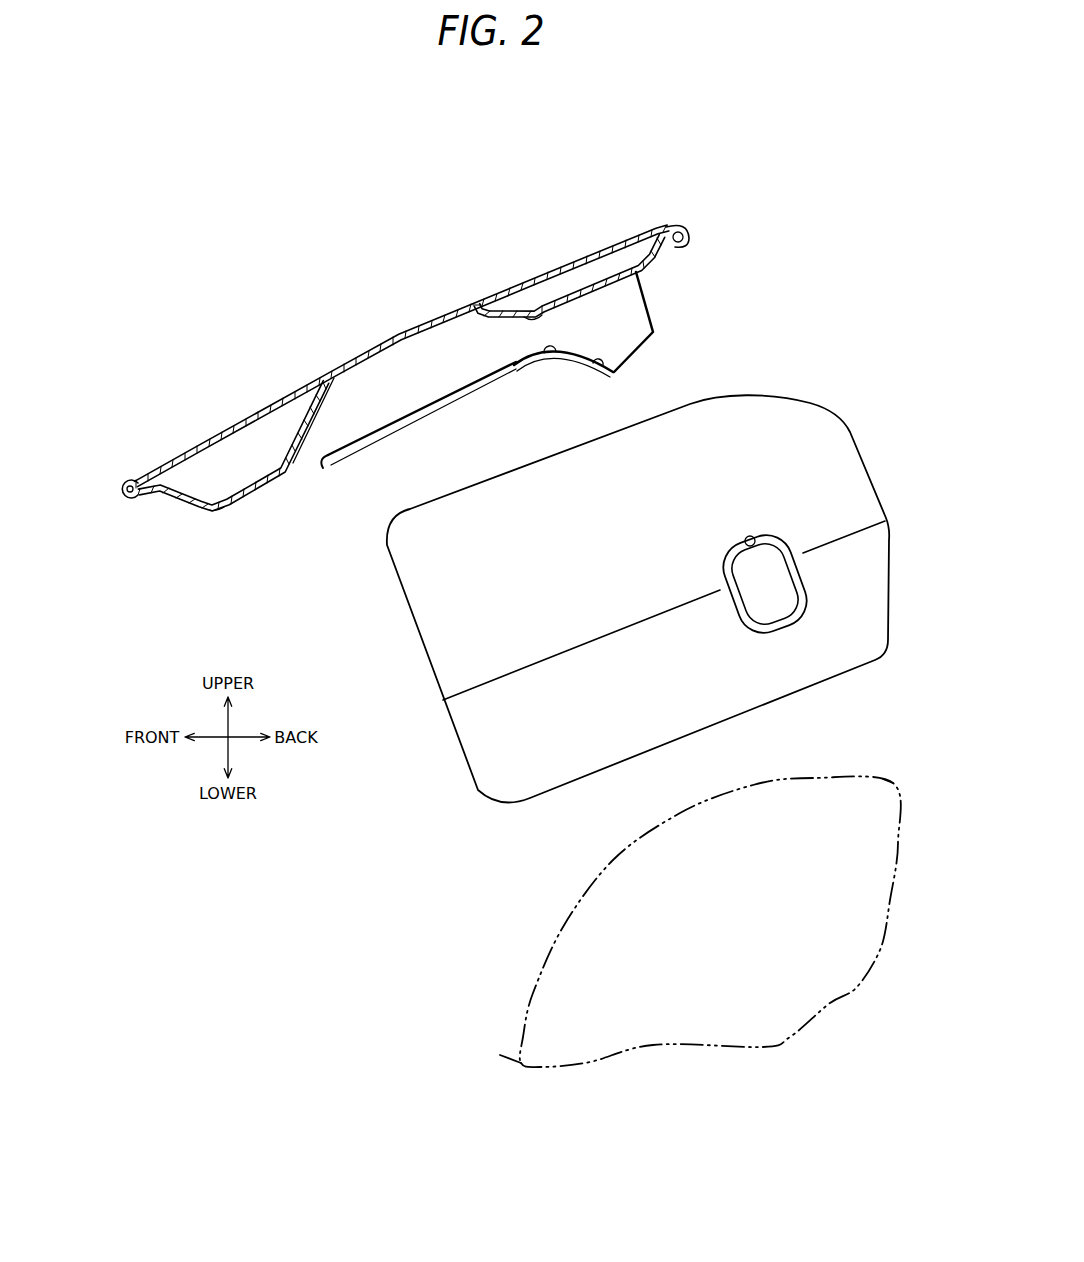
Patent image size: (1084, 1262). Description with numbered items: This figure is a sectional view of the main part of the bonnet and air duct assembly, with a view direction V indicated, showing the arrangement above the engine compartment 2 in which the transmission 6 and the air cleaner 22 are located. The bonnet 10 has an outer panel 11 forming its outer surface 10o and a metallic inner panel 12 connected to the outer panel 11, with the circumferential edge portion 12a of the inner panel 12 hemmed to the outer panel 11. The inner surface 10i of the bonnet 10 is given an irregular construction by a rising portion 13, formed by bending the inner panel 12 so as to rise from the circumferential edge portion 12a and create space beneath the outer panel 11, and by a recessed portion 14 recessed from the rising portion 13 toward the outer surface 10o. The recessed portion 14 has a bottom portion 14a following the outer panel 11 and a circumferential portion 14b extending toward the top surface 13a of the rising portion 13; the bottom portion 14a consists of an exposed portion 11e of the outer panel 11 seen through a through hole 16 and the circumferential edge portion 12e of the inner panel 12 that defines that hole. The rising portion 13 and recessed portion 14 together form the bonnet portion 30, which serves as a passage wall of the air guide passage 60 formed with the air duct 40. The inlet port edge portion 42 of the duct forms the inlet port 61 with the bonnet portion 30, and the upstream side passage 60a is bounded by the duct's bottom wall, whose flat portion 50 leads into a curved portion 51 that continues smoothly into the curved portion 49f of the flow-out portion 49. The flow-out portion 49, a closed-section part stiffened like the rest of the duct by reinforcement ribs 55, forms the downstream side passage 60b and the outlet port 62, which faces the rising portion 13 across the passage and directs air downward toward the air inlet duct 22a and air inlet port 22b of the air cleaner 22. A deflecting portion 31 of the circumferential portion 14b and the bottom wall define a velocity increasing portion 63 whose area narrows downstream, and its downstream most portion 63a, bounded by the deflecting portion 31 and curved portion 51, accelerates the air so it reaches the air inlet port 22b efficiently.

The engine compartment 2 is at (305, 609).
The transmission 6 is at (580, 900).
The bonnet 10 is at (250, 326).
The outer surface of the bonnet 10o is at (348, 357).
The inner surface of the bonnet 10i is at (238, 506).
The outer panel 11 is at (206, 432).
The exposed portion of the outer panel 11e is at (410, 335).
The inner panel 12 is at (287, 427).
The circumferential edge portion of the inner panel 12a is at (130, 480).
The circumferential edge portion of the inner panel specifying the through hole 12e is at (483, 308).
The rising portion 13 is at (230, 471).
The top surface of the rising portion 13a is at (218, 505).
The recessed portion 14 is at (429, 382).
The bottom portion 14a is at (470, 330).
The circumferential portion 14b is at (317, 403).
The through hole 16 is at (330, 370).
The air cleaner 22 is at (443, 662).
The air inlet duct 22a is at (720, 620).
The air inlet port 22b is at (752, 540).
The bonnet portion 30 is at (500, 371).
The deflecting portion 31 is at (537, 330).
The air duct 40 is at (405, 455).
The inlet port edge portion 42 is at (323, 466).
The flow-out portion 49 is at (659, 308).
The curved portion of the flow-out portion 49f is at (613, 374).
The flat portion 50 is at (367, 442).
The curved portion 51 is at (570, 352).
The reinforcement ribs 55 is at (514, 366).
The air guide passage 60 is at (592, 306).
The upstream side passage 60a is at (377, 375).
The downstream side passage 60b is at (637, 325).
The inlet port 61 is at (305, 460).
The outlet port 62 is at (640, 352).
The velocity increasing portion 63 is at (545, 266).
The downstream most end portion of the velocity increasing portion 63a is at (533, 332).
The view direction V is at (346, 233).